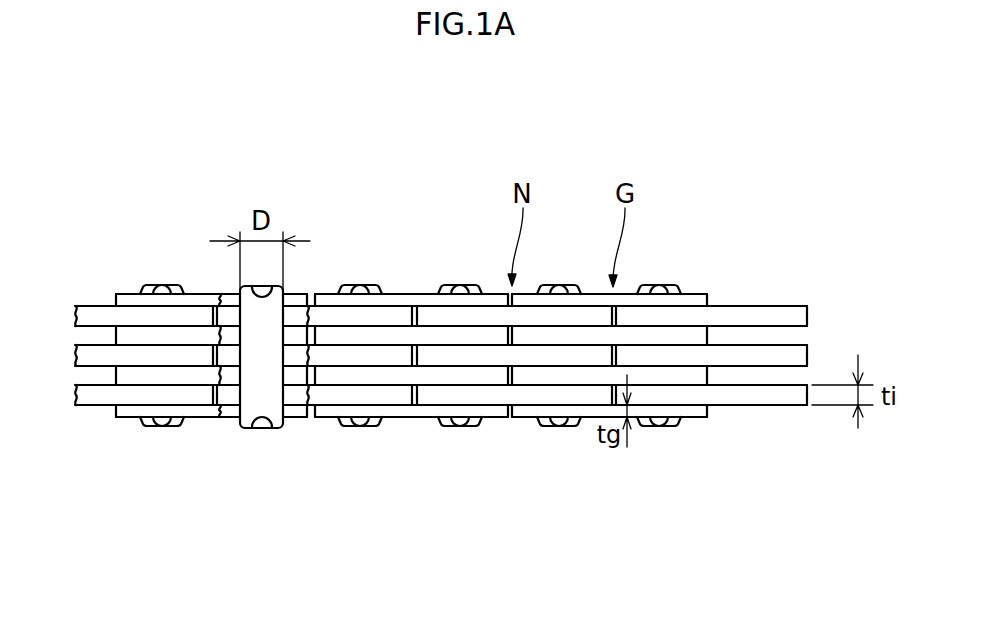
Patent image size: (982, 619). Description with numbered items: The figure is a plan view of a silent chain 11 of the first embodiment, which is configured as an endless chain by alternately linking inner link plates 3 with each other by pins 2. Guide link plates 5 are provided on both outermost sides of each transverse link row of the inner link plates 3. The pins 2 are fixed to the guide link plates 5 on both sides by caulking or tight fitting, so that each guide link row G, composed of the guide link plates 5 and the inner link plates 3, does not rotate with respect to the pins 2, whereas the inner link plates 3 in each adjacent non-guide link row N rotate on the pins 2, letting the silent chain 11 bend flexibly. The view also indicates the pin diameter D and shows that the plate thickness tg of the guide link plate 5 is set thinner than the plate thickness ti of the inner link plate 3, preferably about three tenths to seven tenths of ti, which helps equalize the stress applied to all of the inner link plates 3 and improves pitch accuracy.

The silent chain 11 is at (770, 237).
The pin 2 is at (262, 429).
The inner link plate 3 is at (120, 381).
The guide link plate 5 is at (200, 294).